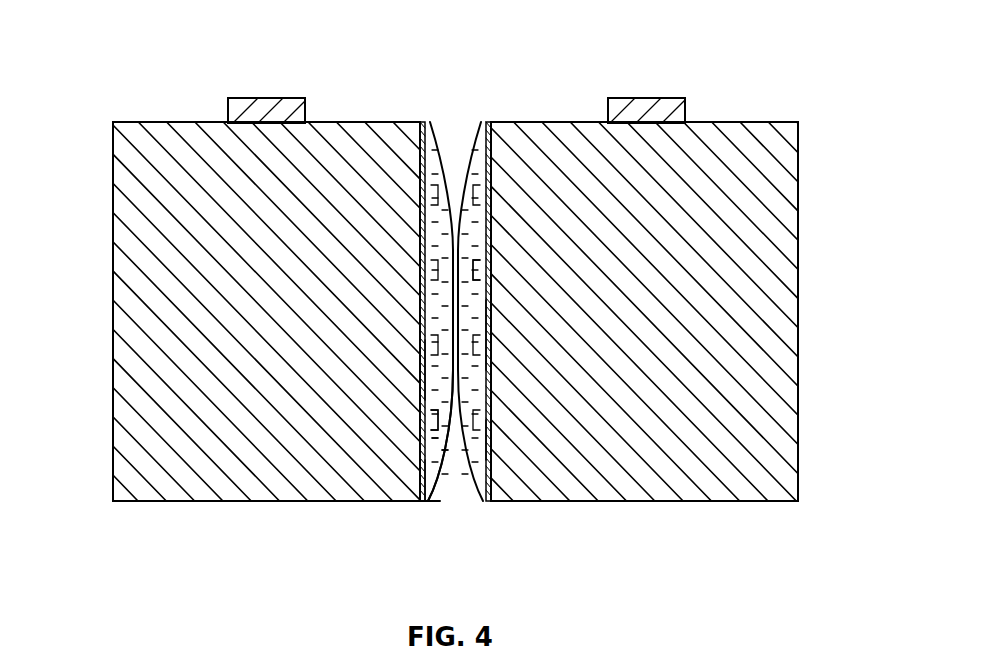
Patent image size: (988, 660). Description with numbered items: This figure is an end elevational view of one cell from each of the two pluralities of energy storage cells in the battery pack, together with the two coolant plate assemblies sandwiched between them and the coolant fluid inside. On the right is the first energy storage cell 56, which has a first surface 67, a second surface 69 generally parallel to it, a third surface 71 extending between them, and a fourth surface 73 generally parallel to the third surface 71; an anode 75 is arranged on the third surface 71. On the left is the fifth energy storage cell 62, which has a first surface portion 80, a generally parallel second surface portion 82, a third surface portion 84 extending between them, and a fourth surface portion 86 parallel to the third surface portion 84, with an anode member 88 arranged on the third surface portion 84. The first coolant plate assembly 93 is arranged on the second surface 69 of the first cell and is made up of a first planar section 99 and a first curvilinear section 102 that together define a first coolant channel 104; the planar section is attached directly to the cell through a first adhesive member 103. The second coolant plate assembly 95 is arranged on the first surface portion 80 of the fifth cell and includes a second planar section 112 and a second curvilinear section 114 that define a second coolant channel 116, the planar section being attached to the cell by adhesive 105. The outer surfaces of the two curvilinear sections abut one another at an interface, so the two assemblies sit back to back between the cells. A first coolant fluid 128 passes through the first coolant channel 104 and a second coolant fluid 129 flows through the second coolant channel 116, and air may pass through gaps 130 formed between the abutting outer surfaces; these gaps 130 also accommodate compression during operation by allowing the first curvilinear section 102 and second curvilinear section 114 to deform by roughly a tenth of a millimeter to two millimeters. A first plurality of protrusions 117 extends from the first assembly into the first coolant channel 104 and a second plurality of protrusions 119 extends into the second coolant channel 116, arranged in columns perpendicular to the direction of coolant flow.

The first energy storage cell 56 is at (567, 301).
The fifth energy storage cell 62 is at (380, 300).
The first surface 67 is at (800, 243).
The second surface 69 is at (427, 477).
The third surface 71 is at (756, 122).
The fourth surface 73 is at (713, 502).
The anode 75 is at (665, 110).
The first surface portion 80 is at (437, 128).
The second surface portion 82 is at (112, 176).
The third surface portion 84 is at (185, 122).
The fourth surface portion 86 is at (216, 502).
The anode member 88 is at (262, 108).
The first coolant plate assembly 93 is at (465, 126).
The second coolant plate assembly 95 is at (420, 507).
The first planar section 99 is at (495, 126).
The first curvilinear section 102 is at (428, 432).
The first adhesive member 103 is at (491, 337).
The first coolant channel 104 is at (479, 196).
The adhesive 105 is at (422, 372).
The second planar section 112 is at (421, 258).
The second curvilinear section 114 is at (452, 404).
The second coolant channel 116 is at (428, 127).
The first plurality of protrusions 117 is at (477, 253).
The second plurality of protrusions 119 is at (428, 215).
The first coolant fluid 128 is at (472, 298).
The second coolant fluid 129 is at (437, 397).
The gaps 130 is at (489, 150).